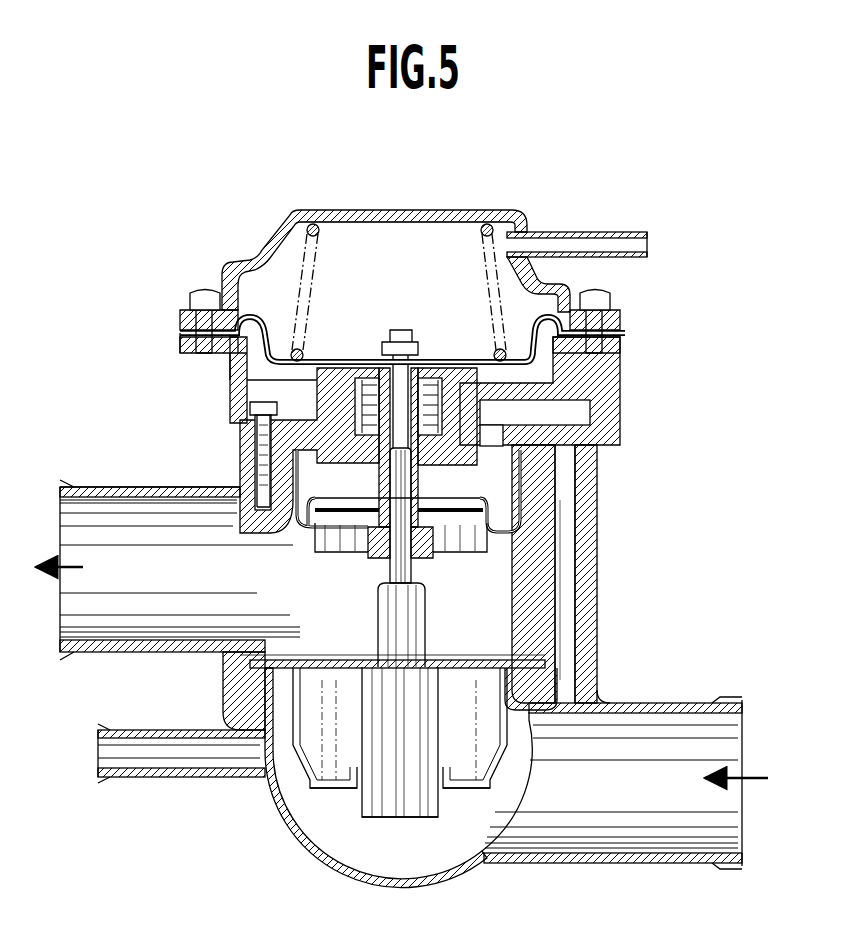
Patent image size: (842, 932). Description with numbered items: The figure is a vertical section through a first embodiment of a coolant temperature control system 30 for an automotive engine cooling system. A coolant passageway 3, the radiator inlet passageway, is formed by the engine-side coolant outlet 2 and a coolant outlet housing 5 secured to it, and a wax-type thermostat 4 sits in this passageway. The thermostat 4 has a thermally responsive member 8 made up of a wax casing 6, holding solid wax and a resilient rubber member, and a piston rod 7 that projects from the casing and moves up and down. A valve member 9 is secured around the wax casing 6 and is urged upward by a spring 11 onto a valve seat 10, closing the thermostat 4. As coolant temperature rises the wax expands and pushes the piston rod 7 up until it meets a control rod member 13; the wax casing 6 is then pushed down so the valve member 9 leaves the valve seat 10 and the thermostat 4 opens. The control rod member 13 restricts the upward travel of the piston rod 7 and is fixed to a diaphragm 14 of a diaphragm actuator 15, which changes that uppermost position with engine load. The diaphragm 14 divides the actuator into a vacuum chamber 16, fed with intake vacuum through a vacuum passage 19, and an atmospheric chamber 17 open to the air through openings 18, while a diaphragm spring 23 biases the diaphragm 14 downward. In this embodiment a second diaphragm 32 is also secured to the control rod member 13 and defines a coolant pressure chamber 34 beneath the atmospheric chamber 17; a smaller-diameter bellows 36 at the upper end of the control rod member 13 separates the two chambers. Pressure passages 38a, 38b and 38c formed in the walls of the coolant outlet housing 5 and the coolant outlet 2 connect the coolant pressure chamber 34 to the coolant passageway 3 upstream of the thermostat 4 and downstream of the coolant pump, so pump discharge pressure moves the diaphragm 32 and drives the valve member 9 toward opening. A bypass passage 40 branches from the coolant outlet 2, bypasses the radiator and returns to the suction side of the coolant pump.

The coolant outlet 2 is at (628, 863).
The coolant passageway 3 is at (124, 642).
The thermostat 4 is at (325, 790).
The coolant outlet housing 5 is at (85, 487).
The wax casing 6 is at (424, 812).
The piston rod 7 is at (413, 565).
The thermally responsive member 8 is at (385, 805).
The valve member 9 is at (313, 678).
The valve seat 10 is at (305, 660).
The spring 11 is at (345, 775).
The control rod member 13 is at (378, 466).
The diaphragm 14 is at (266, 356).
The diaphragm actuator 15 is at (252, 243).
The vacuum chamber 16 is at (445, 233).
The atmospheric chamber 17 is at (240, 363).
The openings 18 is at (230, 393).
The vacuum passage 19 is at (610, 245).
The diaphragm spring 23 is at (313, 230).
The coolant temperature control system 30 is at (631, 345).
The diaphragm 32 is at (490, 545).
The coolant pressure chamber 34 is at (500, 490).
The bellows 36 is at (445, 380).
The pressure passage 38a is at (575, 388).
The pressure passage 38b is at (565, 622).
The pressure passage 38c is at (565, 690).
The bypass passage 40 is at (148, 758).